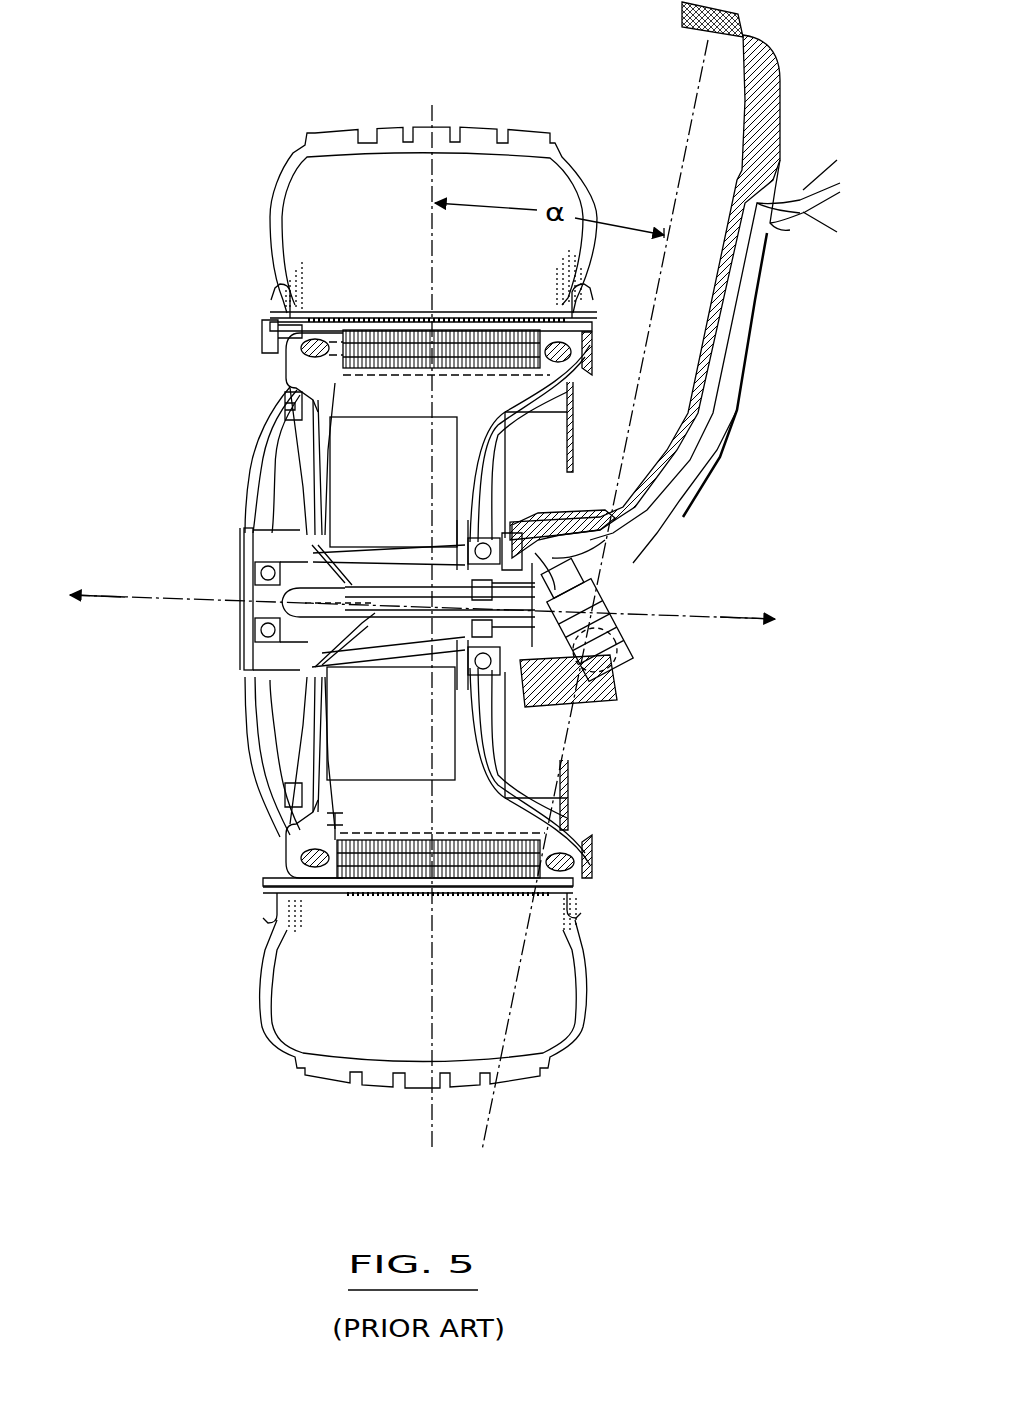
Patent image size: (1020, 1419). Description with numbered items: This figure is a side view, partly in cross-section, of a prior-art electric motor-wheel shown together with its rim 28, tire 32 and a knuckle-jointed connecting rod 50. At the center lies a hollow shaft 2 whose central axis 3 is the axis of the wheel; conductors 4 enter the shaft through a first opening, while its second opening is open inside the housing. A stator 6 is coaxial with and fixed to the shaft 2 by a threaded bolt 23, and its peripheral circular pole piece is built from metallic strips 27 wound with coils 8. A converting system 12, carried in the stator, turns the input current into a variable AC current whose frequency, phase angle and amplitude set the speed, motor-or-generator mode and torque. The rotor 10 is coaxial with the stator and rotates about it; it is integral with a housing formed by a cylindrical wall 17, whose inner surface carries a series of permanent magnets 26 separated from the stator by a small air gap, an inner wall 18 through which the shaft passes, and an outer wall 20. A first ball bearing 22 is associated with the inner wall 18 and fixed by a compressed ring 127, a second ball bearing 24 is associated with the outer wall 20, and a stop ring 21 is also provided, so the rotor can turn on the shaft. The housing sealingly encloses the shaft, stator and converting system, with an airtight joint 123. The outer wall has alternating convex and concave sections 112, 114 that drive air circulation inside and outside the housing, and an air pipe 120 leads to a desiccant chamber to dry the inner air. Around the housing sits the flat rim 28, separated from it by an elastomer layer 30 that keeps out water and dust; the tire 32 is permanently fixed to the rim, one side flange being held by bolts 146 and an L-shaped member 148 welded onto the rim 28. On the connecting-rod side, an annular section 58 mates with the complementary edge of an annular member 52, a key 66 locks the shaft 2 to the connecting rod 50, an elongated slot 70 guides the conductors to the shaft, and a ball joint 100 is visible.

The hollow shaft 2 is at (393, 634).
The central axis 3 is at (120, 595).
The conductors 4 is at (717, 370).
The stator 6 is at (480, 407).
The coils 8 is at (205, 862).
The rotor 10 is at (250, 317).
The converting system 12 is at (376, 480).
The cylindrical wall 17 is at (457, 328).
The inner wall 18 is at (460, 447).
The outer wall 20 is at (210, 472).
The stop ring 21 is at (254, 635).
The first ball bearing 22 is at (443, 535).
The threaded bolt 23 is at (242, 550).
The second ball bearing 24 is at (256, 573).
The permanent magnets 26 is at (493, 328).
The metallic strips 27 is at (588, 886).
The rim 28 is at (275, 285).
The elastomer layer 30 is at (377, 317).
The tire 32 is at (438, 130).
The knuckle-jointed connecting rod 50 is at (793, 93).
The annular member 52 is at (520, 703).
The annular section 58 is at (532, 512).
The key 66 is at (548, 576).
The elongated slot 70 is at (775, 198).
The ball joint 100 is at (633, 650).
The convex section 112 is at (260, 490).
The concave section 114 is at (292, 430).
The air pipe 120 is at (335, 823).
The airtight joint 123 is at (509, 530).
The compressed ring 127 is at (468, 672).
The bolts 146 is at (265, 333).
The L-shaped member 148 is at (283, 312).